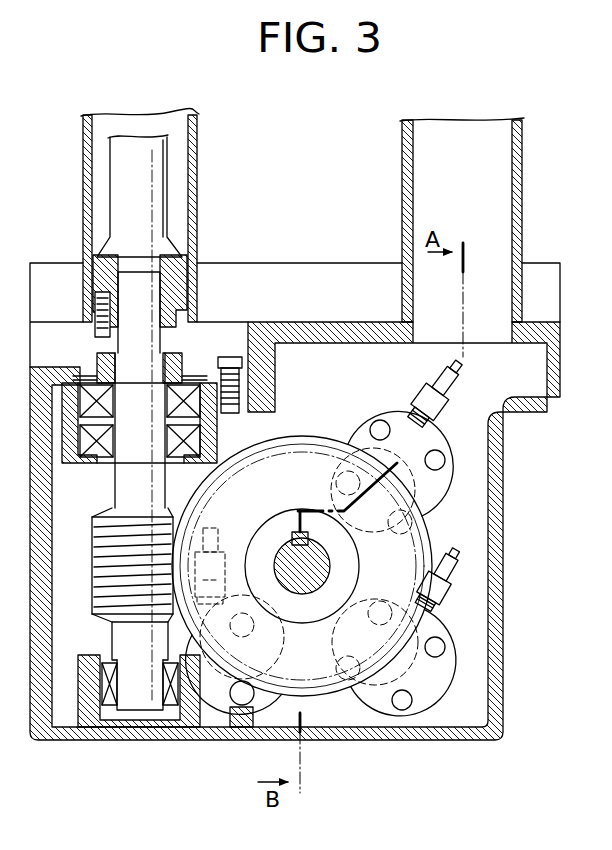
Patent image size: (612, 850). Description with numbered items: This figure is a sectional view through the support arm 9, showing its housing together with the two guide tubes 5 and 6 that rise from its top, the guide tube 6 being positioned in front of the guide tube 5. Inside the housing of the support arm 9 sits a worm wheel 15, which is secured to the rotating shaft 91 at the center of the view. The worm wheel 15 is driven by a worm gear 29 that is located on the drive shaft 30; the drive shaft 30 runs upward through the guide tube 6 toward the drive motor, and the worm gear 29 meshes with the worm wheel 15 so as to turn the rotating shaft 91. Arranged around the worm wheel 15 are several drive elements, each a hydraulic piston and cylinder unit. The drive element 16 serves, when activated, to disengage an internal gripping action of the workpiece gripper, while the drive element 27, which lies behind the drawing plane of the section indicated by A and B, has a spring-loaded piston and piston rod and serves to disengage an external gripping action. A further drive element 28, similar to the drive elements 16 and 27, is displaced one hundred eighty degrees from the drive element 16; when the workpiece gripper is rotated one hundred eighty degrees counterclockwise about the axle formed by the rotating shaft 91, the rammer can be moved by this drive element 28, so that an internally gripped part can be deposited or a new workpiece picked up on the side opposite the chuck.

The guide tube 5 is at (522, 188).
The guide tube 6 is at (197, 180).
The support arm 9 is at (512, 458).
The worm wheel 15 is at (305, 433).
The drive element 16 is at (440, 487).
The drive element 27 is at (430, 693).
The drive element 28 is at (232, 724).
The worm gear 29 is at (112, 562).
The drive shaft 30 is at (155, 212).
The rotating shaft 91 is at (330, 560).